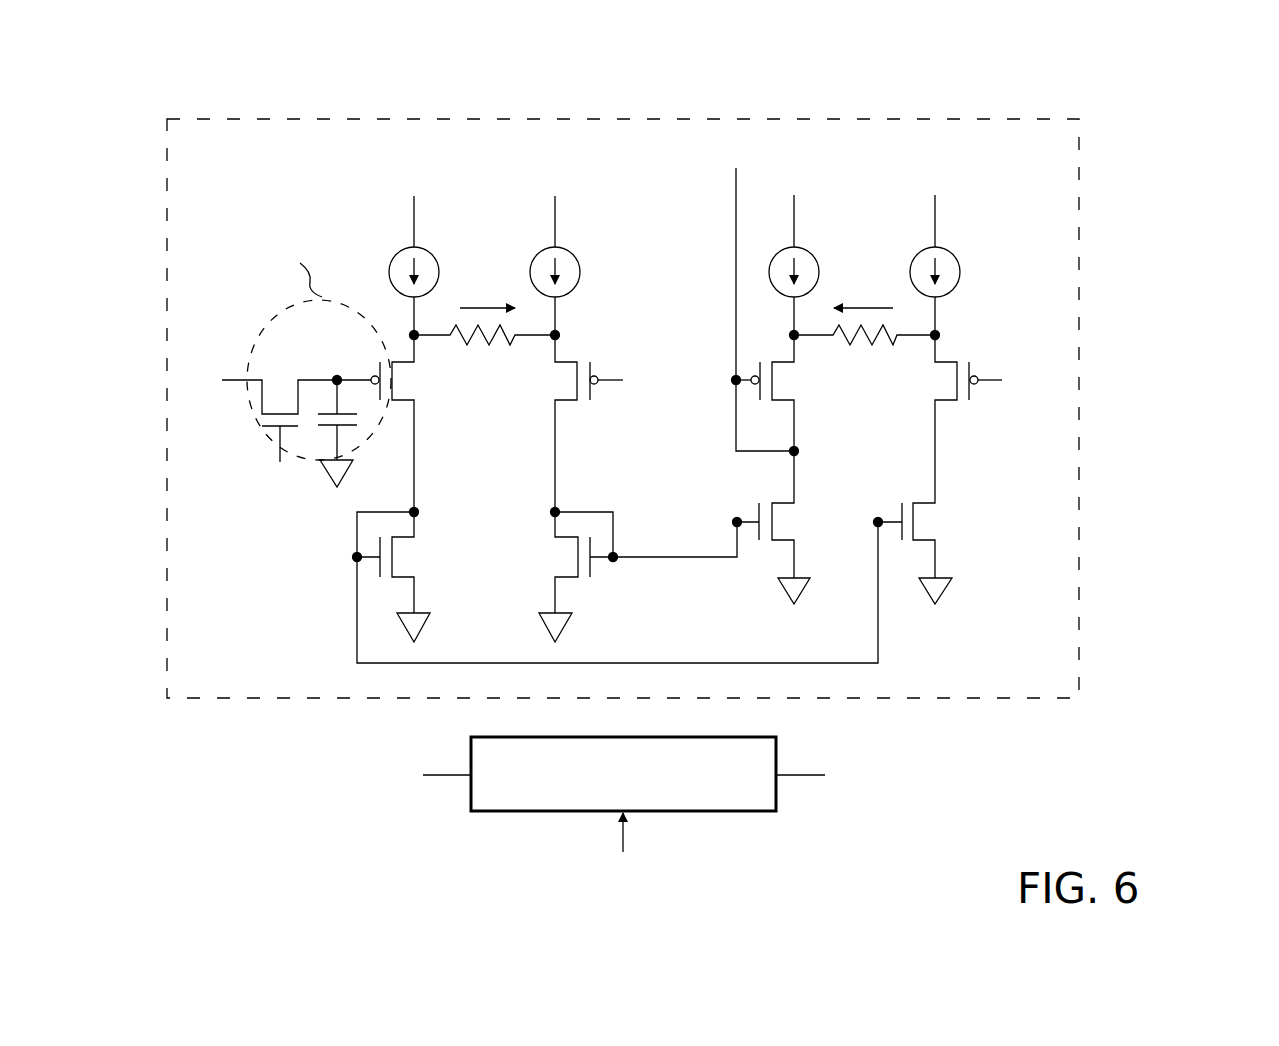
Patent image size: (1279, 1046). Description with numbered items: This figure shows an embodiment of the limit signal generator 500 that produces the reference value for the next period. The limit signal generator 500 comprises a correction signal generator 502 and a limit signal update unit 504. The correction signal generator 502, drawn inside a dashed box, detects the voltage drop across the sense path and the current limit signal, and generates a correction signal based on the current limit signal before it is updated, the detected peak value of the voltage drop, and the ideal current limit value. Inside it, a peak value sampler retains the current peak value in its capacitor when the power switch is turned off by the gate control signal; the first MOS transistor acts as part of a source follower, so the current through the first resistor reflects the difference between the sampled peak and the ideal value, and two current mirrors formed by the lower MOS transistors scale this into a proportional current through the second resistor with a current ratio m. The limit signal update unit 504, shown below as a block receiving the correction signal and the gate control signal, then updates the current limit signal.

The limit signal generator 500 is at (1156, 78).
The correction signal generator 502 is at (626, 118).
The limit signal update unit 504 is at (722, 811).